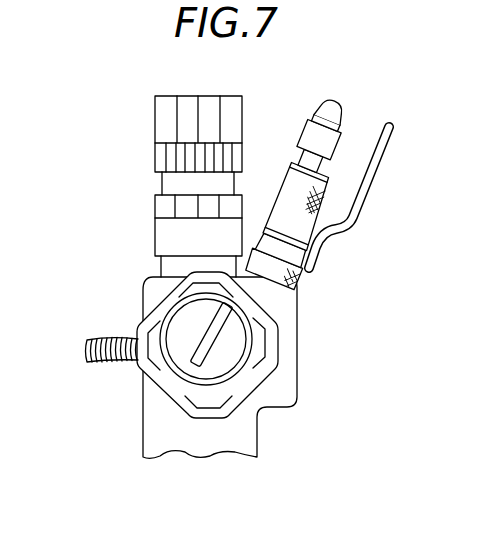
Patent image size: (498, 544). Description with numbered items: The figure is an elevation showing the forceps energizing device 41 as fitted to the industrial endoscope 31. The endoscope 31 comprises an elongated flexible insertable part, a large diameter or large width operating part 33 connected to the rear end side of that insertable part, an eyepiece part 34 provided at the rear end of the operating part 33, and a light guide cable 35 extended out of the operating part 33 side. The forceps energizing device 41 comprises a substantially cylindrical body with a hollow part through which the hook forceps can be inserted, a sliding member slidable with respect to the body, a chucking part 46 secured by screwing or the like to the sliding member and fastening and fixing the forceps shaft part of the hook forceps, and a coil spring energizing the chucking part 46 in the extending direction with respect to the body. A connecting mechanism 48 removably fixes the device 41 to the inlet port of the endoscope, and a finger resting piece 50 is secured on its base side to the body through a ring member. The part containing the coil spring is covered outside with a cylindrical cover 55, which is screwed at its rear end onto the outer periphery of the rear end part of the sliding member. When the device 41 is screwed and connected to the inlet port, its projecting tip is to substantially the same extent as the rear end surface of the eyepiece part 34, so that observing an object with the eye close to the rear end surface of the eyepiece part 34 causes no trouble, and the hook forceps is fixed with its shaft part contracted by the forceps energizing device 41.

The industrial endoscope 31 is at (133, 272).
The operating part 33 is at (299, 361).
The eyepiece part 34 is at (155, 119).
The light guide cable 35 is at (105, 364).
The forceps energizing device 41 is at (350, 118).
The chucking part 46 is at (316, 113).
The connecting mechanism 48 is at (299, 289).
The finger resting piece 50 is at (366, 191).
The cylindrical cover 55 is at (286, 187).